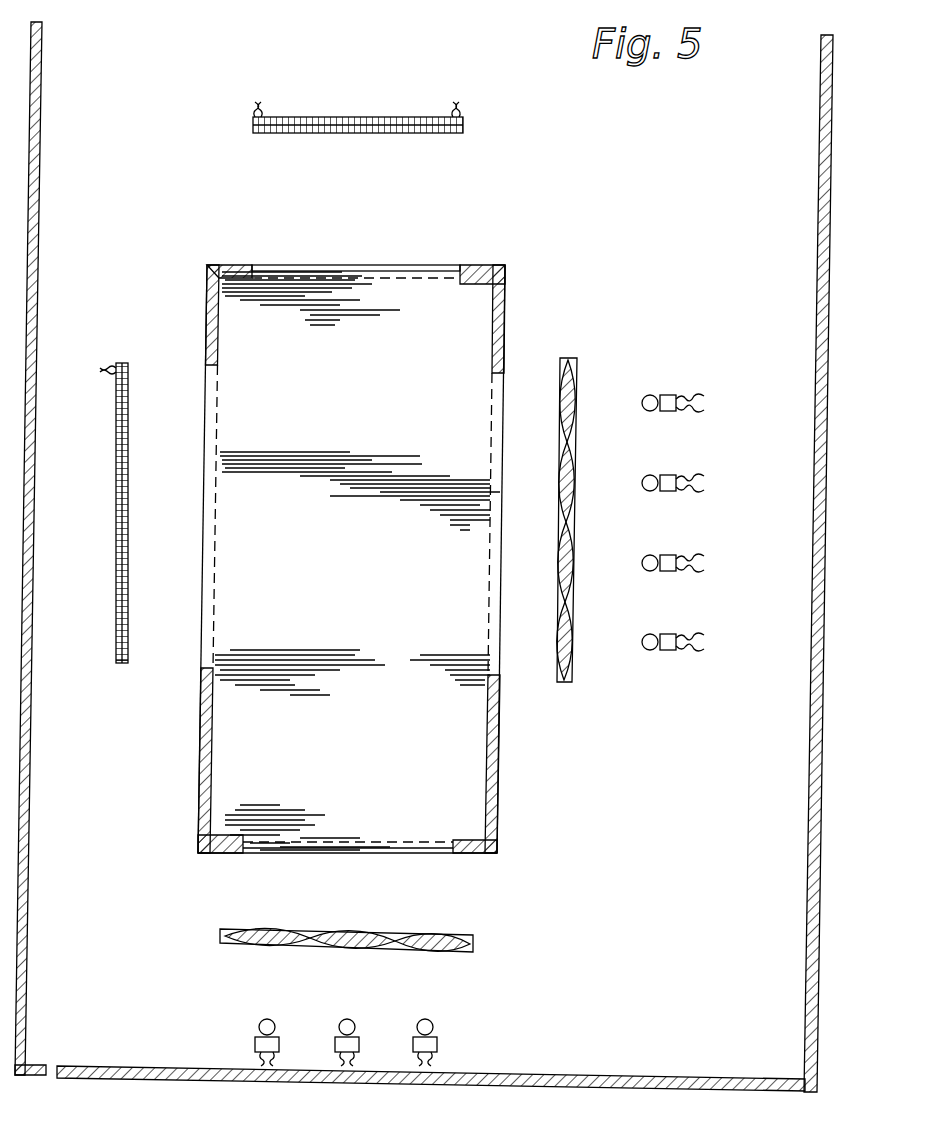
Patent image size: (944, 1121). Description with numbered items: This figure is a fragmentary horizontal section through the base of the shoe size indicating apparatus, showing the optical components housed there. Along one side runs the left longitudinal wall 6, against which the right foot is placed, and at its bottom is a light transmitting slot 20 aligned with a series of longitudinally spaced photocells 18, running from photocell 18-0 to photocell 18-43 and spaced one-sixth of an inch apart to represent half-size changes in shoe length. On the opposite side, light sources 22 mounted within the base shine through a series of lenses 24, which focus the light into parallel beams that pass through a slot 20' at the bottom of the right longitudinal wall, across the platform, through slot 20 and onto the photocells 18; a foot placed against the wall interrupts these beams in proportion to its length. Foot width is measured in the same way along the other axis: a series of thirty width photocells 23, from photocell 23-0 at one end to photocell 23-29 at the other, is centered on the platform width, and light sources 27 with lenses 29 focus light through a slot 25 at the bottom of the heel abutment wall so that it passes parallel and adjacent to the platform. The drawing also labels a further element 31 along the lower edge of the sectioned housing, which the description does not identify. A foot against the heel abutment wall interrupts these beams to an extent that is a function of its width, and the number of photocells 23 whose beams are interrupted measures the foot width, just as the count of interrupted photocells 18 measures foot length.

The left longitudinal wall 6 is at (207, 303).
The photocells 18 is at (130, 452).
The photocell 18-0 is at (128, 662).
The photocell 18-43 is at (128, 370).
The light transmitting slot 20 is at (184, 516).
The slot 20' is at (404, 476).
The light sources 22 is at (650, 395).
The photocells 23 is at (362, 137).
The width photocell 23-0 is at (256, 132).
The width photocell 23-29 is at (460, 134).
The lenses 24 is at (576, 378).
The slot 25 is at (318, 268).
The light sources 27 is at (344, 1022).
The lenses 29 is at (267, 930).
The bottom rail 31 is at (300, 842).